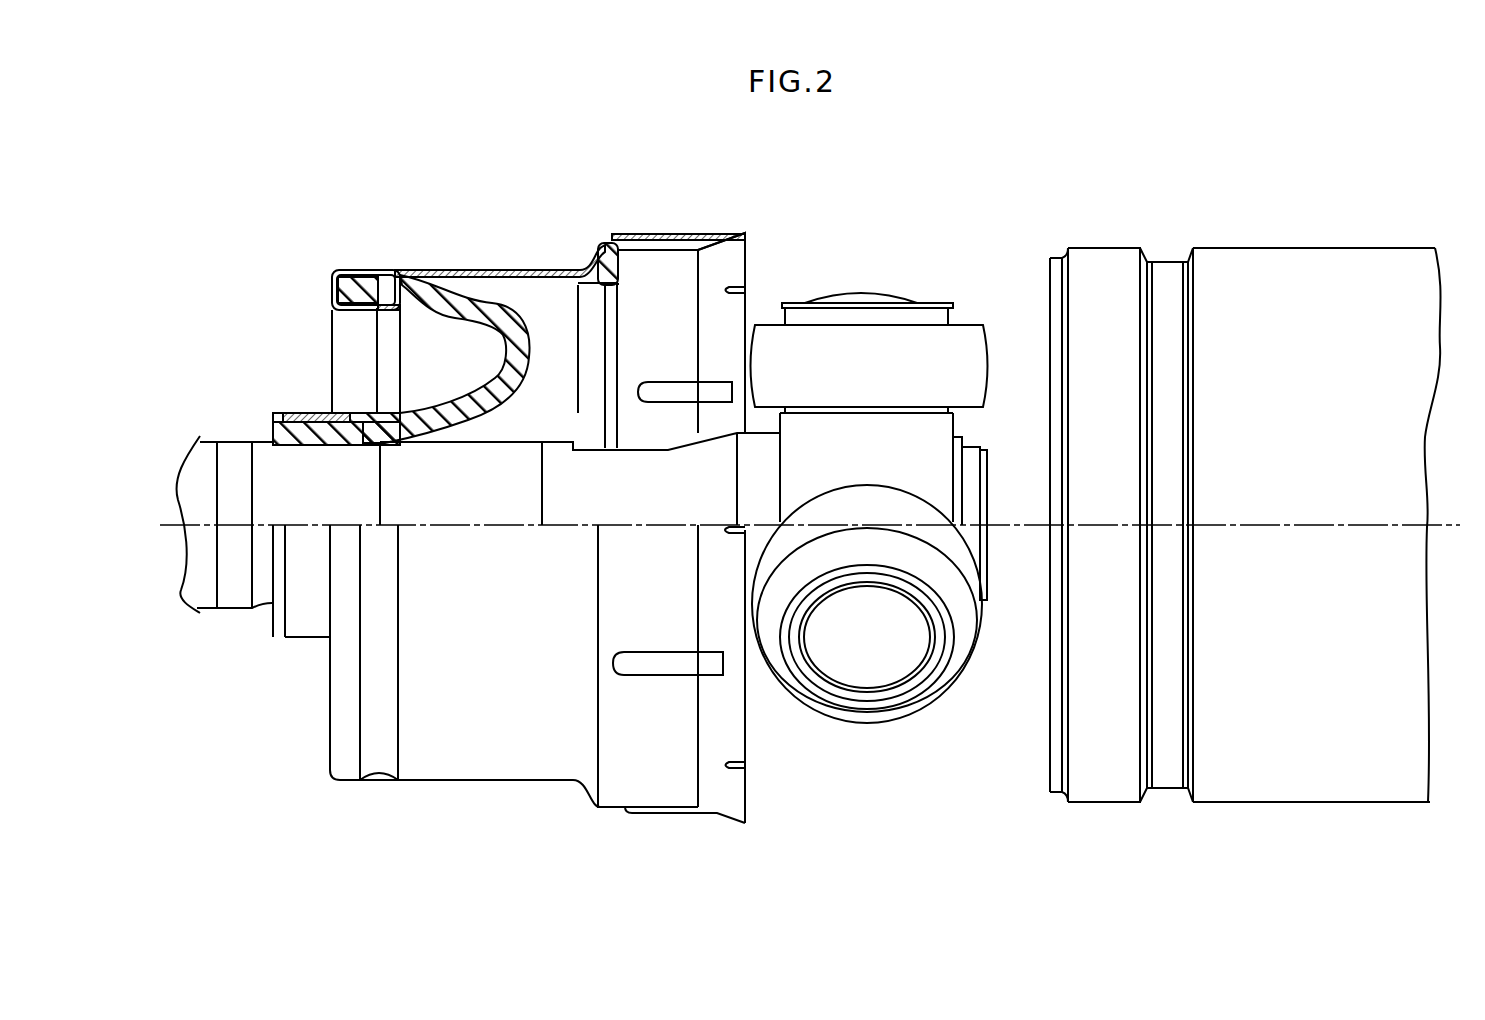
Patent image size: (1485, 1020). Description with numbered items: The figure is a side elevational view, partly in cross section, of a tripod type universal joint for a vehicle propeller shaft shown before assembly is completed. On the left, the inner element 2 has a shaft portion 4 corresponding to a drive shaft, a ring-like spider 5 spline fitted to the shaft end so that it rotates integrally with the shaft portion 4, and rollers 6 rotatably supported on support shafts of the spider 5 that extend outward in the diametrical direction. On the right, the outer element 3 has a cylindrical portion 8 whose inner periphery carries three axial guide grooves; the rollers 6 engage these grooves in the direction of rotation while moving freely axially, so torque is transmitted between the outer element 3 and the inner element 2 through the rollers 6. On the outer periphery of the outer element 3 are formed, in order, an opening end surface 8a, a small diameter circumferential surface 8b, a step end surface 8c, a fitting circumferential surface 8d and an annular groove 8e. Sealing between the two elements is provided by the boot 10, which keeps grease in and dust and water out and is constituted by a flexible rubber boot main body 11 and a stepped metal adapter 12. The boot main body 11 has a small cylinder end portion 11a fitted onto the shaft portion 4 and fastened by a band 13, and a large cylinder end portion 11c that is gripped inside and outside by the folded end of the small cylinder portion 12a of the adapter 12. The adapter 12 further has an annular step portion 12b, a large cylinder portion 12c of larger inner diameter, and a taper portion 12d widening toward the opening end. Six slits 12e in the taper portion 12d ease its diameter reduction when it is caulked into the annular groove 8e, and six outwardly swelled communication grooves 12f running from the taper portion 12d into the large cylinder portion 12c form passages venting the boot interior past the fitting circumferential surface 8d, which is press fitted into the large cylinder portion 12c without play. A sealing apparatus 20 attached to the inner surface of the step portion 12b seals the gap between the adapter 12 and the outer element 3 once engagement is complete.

The inner element 2 is at (886, 268).
The outer element 3 is at (1297, 178).
The shaft portion 4 is at (197, 455).
The spider 5 is at (942, 432).
The roller 6 is at (972, 340).
The cylindrical portion 8 is at (1317, 238).
The opening end surface 8a is at (1050, 758).
The small diameter circumferential surface 8b is at (1057, 793).
The step end surface 8c is at (1066, 253).
The fitting circumferential surface 8d is at (1108, 248).
The annular groove 8e is at (1165, 258).
The boot 10 is at (370, 226).
The boot main body 11 is at (433, 398).
The small cylinder end portion 11a is at (290, 435).
The large cylinder end portion 11c is at (352, 280).
The adapter 12 is at (491, 243).
The small cylinder portion 12a is at (510, 267).
The annular step portion 12b is at (601, 246).
The large cylinder portion 12c is at (617, 240).
The taper portion 12d is at (738, 236).
The slit 12e is at (740, 290).
The communication groove 12f is at (664, 245).
The band 13 is at (307, 412).
The sealing apparatus 20 is at (621, 278).